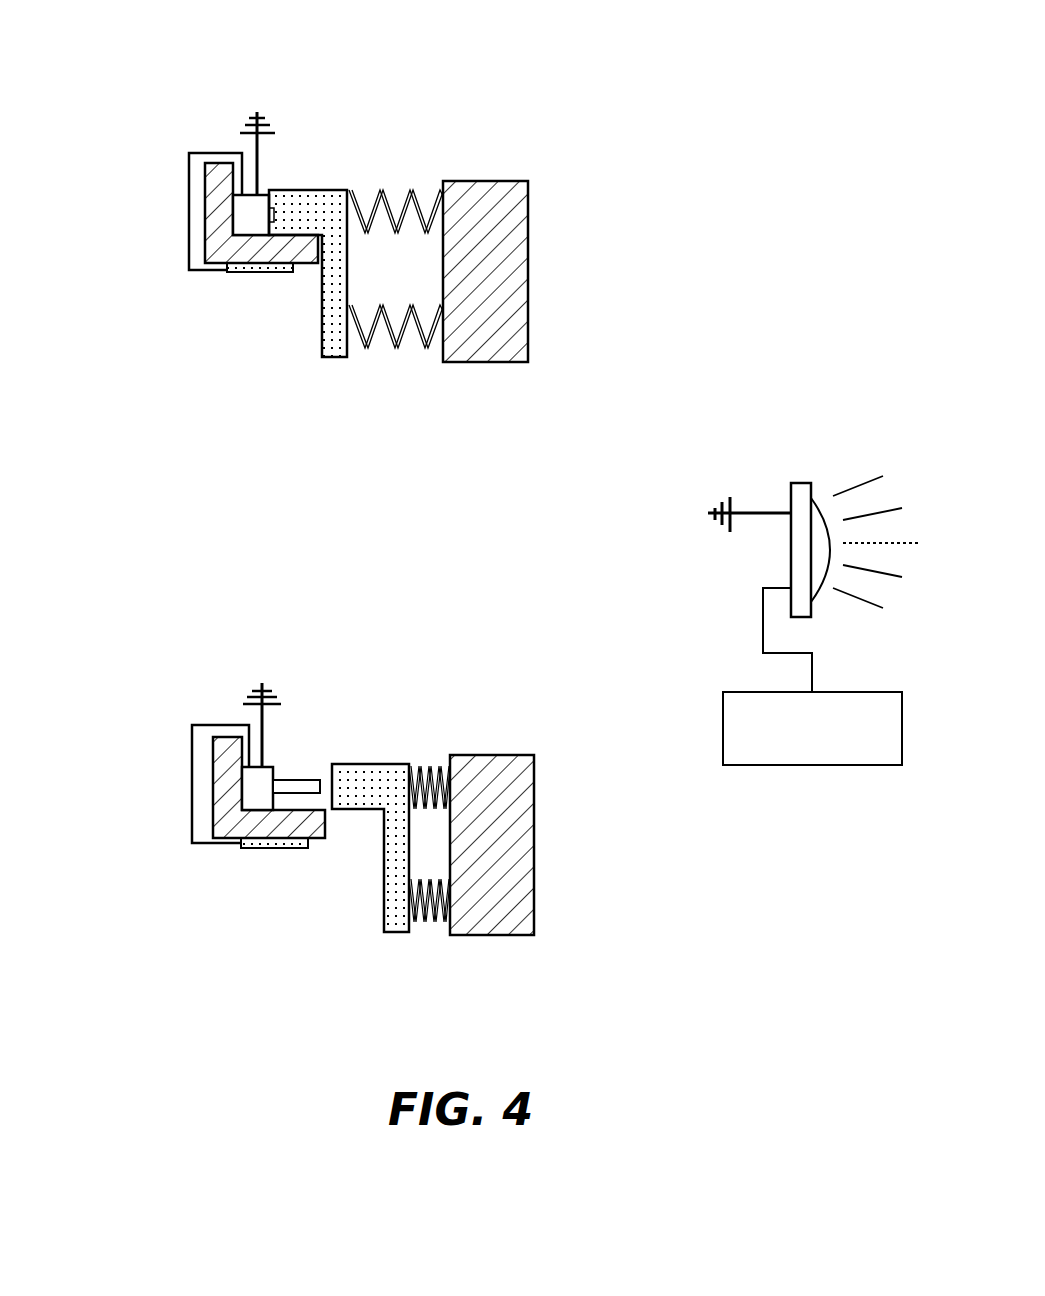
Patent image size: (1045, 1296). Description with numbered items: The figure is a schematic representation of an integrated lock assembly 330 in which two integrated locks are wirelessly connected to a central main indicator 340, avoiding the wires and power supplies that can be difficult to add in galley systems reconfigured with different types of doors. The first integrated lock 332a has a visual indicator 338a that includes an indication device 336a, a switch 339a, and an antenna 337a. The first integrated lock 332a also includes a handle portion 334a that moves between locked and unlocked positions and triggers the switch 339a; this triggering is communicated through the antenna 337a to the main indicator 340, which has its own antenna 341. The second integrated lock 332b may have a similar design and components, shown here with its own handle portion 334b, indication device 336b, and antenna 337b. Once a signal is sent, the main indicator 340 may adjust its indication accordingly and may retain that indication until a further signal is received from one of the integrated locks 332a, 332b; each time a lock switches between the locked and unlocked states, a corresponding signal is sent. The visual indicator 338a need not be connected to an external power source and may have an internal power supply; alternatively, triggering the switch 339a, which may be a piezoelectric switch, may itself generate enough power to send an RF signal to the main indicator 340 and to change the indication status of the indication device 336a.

The integrated lock assembly 330 is at (808, 98).
The first integrated lock 332a is at (470, 143).
The second integrated lock 332b is at (480, 720).
The handle portion 334a is at (340, 356).
The handle portion 334b is at (398, 928).
The indication device 336a is at (240, 274).
The indication device 336b is at (293, 779).
The antenna 337a is at (247, 122).
The antenna 337b is at (252, 692).
The visual indicator 338a is at (185, 314).
The switch 339a is at (240, 208).
The main indicator 340 is at (797, 512).
The antenna 341 is at (708, 508).